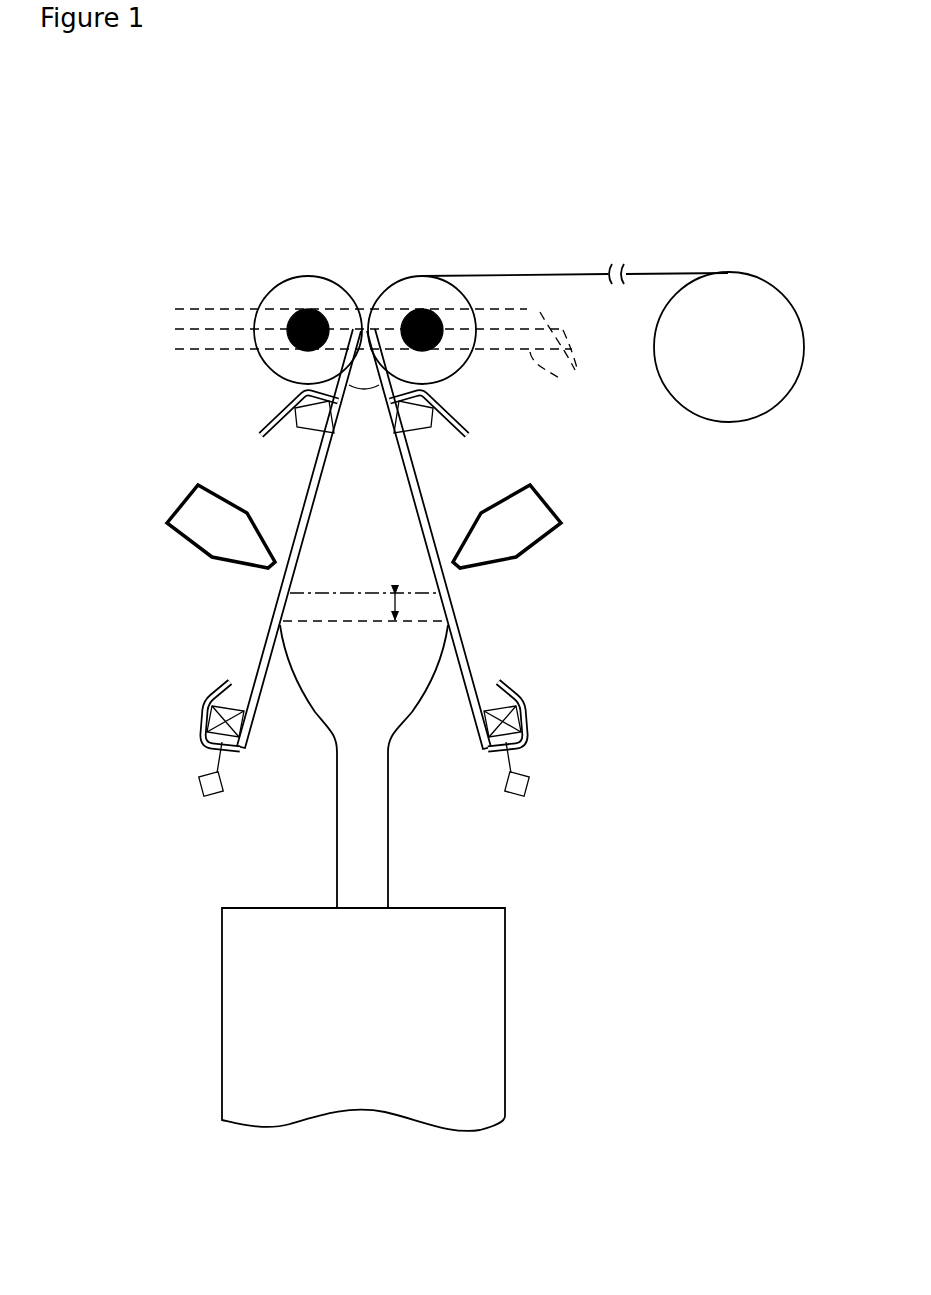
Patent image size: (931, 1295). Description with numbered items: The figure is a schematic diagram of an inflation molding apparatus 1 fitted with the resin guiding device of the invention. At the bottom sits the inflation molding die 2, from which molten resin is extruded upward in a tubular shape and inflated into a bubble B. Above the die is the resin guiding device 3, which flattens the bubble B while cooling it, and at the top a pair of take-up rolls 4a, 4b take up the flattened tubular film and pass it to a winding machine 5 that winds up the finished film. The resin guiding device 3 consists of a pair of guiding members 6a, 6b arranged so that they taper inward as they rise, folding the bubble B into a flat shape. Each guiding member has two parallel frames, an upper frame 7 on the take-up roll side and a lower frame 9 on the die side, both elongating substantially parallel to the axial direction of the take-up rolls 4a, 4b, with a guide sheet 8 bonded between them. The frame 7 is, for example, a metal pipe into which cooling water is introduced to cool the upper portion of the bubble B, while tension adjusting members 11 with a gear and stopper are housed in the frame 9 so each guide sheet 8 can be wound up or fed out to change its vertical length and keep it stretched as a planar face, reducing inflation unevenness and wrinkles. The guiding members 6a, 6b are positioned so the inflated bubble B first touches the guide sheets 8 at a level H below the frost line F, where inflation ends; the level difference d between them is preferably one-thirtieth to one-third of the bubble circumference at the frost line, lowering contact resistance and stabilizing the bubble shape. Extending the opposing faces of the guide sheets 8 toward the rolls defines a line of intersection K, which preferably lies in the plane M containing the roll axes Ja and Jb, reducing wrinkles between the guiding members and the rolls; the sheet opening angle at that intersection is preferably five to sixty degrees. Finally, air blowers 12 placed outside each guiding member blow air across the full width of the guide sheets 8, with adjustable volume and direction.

The inflation molding apparatus 1 is at (165, 218).
The inflation molding die 2 is at (505, 985).
The resin guiding device 3 is at (88, 403).
The take-up roll 4a is at (305, 277).
The take-up roll 4b is at (422, 277).
The winding machine 5 is at (729, 402).
The guiding member 6a is at (178, 745).
The guiding member 6b is at (550, 745).
The frame 7 is at (310, 417).
The guide sheet 8 is at (266, 641).
The frame 9 is at (213, 718).
The tension adjusting member 11 is at (203, 790).
The air blower 12 is at (168, 515).
The line of intersection K is at (365, 330).
The axis of take-up roll Ja is at (287, 328).
The axis of take-up roll Jb is at (443, 321).
The plane M is at (379, 352).
The frost line F is at (349, 592).
The level H is at (337, 623).
The level difference d is at (393, 622).
The bubble B is at (318, 722).